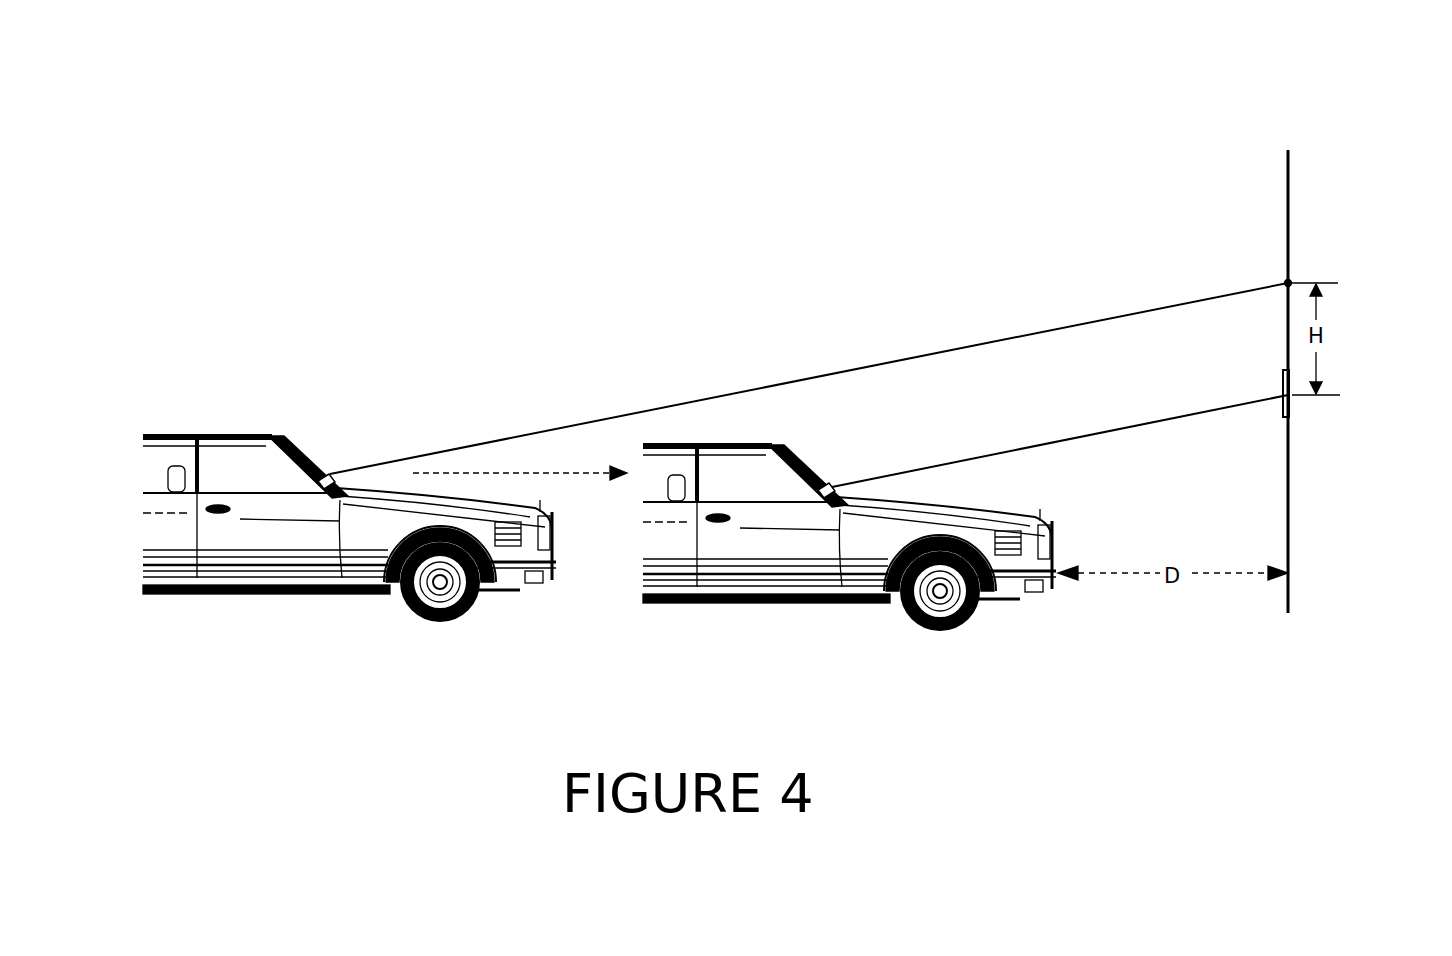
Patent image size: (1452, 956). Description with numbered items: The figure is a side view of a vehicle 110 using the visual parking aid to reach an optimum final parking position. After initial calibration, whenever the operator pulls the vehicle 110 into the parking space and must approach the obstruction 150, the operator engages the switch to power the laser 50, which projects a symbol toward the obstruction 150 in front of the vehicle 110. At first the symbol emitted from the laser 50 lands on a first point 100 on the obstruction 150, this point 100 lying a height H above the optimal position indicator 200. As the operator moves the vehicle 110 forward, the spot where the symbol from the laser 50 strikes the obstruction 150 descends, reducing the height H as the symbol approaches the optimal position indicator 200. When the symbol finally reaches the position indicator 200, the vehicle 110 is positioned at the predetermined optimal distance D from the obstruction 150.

The laser 50 is at (333, 472).
The first point 100 is at (1288, 283).
The vehicle 110 is at (348, 475).
The obstruction 150 is at (1288, 175).
The optimal position indicator 200 is at (1290, 412).